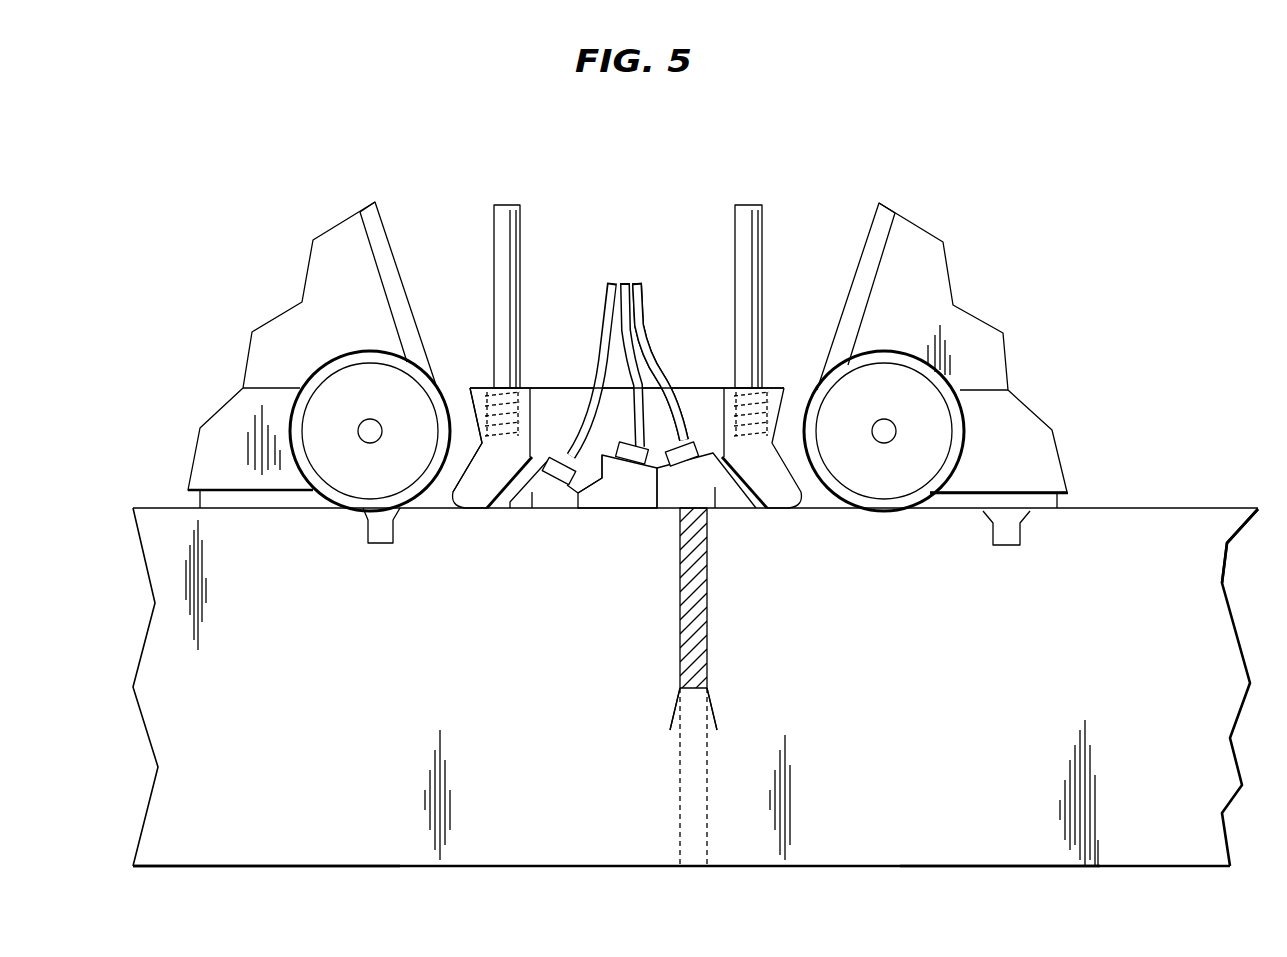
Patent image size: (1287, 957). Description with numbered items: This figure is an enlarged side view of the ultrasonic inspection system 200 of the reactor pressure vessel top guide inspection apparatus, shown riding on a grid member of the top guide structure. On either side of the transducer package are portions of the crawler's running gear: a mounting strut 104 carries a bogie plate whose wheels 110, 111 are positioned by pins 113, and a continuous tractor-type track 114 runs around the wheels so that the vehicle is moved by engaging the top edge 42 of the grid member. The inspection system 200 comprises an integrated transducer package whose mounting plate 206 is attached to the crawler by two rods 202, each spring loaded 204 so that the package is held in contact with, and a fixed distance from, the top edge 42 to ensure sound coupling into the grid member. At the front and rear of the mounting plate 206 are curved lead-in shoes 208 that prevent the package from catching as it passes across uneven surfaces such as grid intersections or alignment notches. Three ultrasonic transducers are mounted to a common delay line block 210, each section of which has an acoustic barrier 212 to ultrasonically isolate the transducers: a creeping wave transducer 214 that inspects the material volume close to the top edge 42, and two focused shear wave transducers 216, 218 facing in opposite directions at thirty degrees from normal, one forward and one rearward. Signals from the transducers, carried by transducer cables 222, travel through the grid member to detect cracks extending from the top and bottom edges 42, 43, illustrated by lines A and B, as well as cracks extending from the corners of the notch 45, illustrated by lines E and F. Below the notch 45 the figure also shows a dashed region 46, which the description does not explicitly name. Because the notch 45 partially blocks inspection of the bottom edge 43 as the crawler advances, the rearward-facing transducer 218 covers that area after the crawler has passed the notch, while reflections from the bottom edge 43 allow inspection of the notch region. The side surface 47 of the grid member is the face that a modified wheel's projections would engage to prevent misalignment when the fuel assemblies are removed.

The inspection system 200 is at (542, 168).
The rod 202 is at (495, 223).
The spring loading 204 is at (483, 385).
The mounting plate 206 is at (560, 403).
The curved lead-in shoe 208 is at (462, 510).
The delay line block 210 is at (555, 508).
The acoustic barrier 212 is at (600, 455).
The creeping wave transducer 214 is at (512, 508).
The shear wave transducer 216 is at (607, 508).
The shear wave transducer 218 is at (703, 425).
The transducer cable 222 is at (625, 275).
The mounting strut 104 is at (358, 312).
The wheel 110 is at (320, 407).
The wheel 111 is at (927, 393).
The pin 113 is at (372, 437).
The track 114 is at (387, 280).
The top edge 42 is at (443, 482).
The notch 45 is at (705, 648).
The cut line 46 is at (690, 785).
The side surface 47 is at (891, 723).
The bottom edge 43 is at (223, 866).
The line A is at (958, 866).
The line B is at (1143, 510).
The line E is at (668, 713).
The line F is at (720, 710).